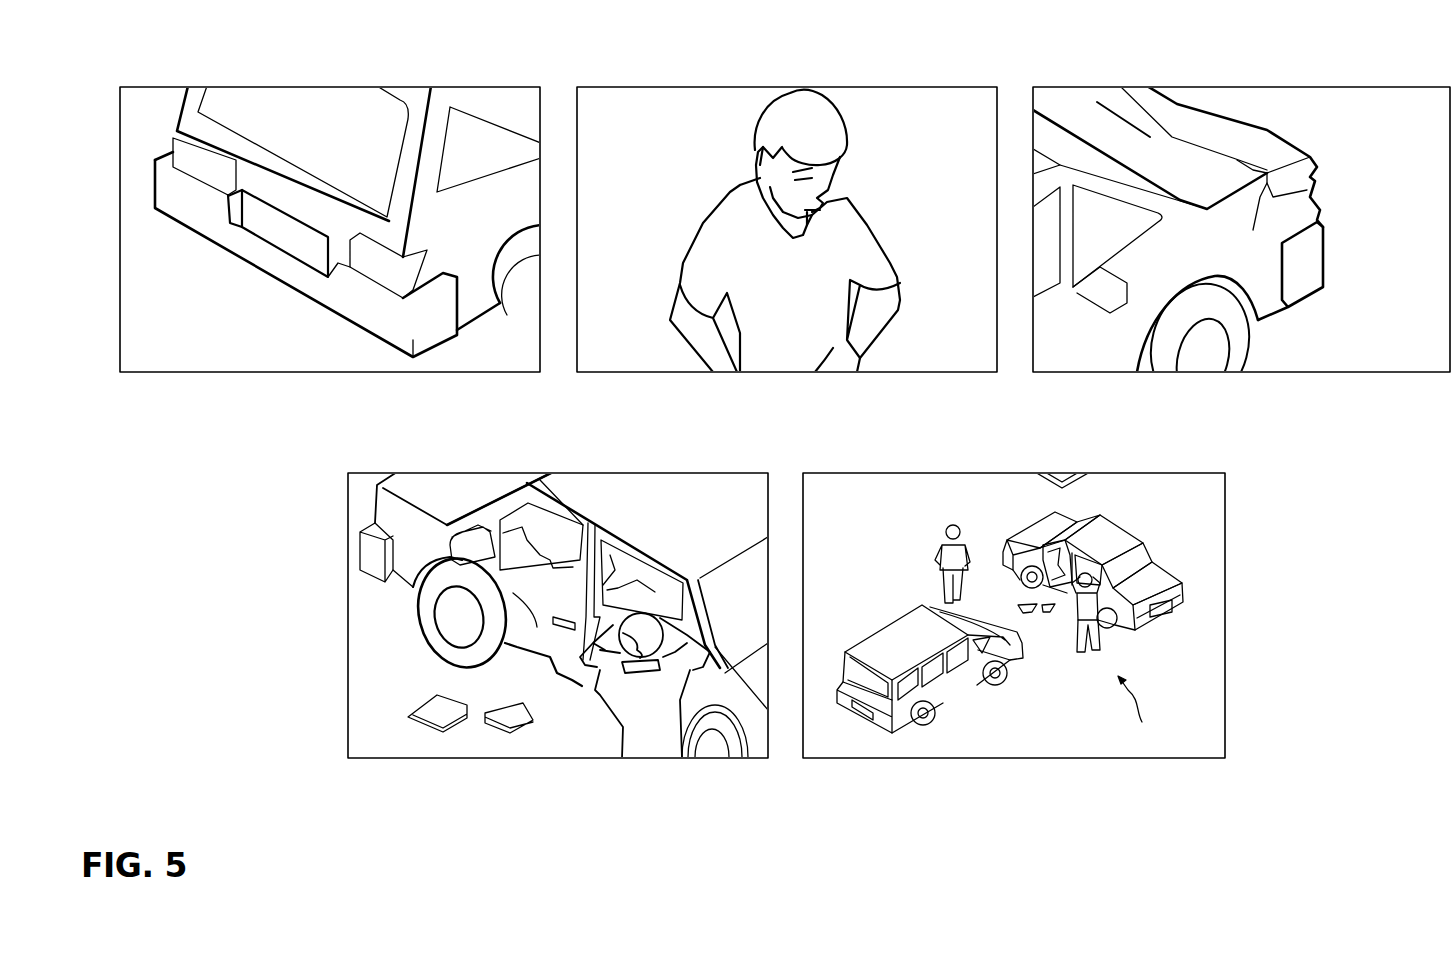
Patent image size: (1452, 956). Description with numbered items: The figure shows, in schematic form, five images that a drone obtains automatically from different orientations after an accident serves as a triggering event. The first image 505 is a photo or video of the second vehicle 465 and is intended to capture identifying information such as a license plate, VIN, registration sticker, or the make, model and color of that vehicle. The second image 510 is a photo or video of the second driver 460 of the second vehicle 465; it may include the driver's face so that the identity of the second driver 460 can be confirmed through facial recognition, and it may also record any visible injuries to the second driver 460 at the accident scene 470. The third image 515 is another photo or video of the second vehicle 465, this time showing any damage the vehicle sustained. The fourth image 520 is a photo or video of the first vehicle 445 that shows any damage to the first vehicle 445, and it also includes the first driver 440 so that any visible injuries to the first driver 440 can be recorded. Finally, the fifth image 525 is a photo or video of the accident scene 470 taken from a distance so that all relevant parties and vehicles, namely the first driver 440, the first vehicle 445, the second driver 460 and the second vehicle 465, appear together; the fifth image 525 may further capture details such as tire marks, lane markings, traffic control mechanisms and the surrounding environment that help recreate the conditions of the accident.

The first image 505 is at (330, 86).
The second image 510 is at (786, 86).
The third image 515 is at (1240, 86).
The fourth image 520 is at (348, 617).
The fifth image 525 is at (1226, 613).
The first driver 440 is at (630, 697).
The first vehicle 445 is at (678, 522).
The second driver 460 is at (703, 223).
The second vehicle 465 is at (208, 213).
The accident scene 470 is at (1152, 710).